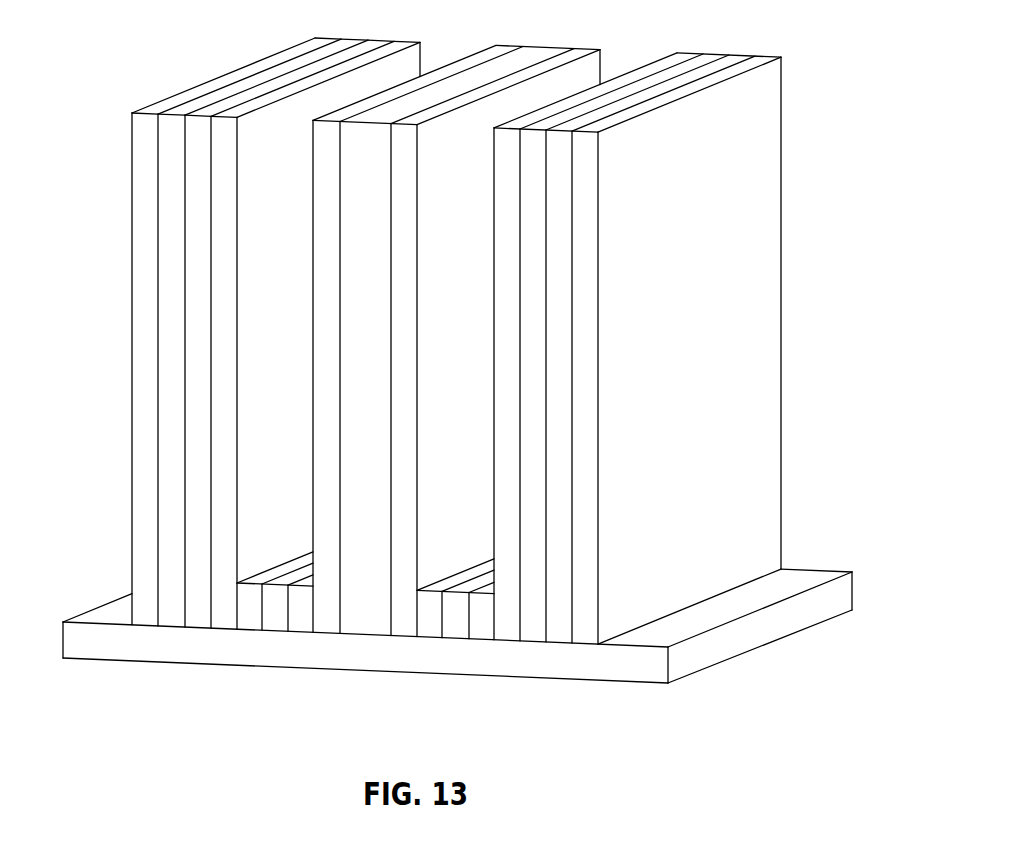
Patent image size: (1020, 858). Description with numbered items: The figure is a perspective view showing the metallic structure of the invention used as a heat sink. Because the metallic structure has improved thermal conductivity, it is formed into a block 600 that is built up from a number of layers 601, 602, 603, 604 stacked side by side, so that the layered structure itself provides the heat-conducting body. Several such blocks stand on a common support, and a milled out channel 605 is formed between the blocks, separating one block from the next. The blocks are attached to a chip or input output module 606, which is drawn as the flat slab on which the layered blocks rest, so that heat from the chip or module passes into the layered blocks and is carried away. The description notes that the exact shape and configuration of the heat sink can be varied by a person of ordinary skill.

The block 600 is at (412, 381).
The layer 601 is at (147, 593).
The layer 602 is at (172, 593).
The layer 603 is at (200, 593).
The layer 604 is at (223, 593).
The milled out channel 605 is at (282, 571).
The chip or input output module 606 is at (788, 580).